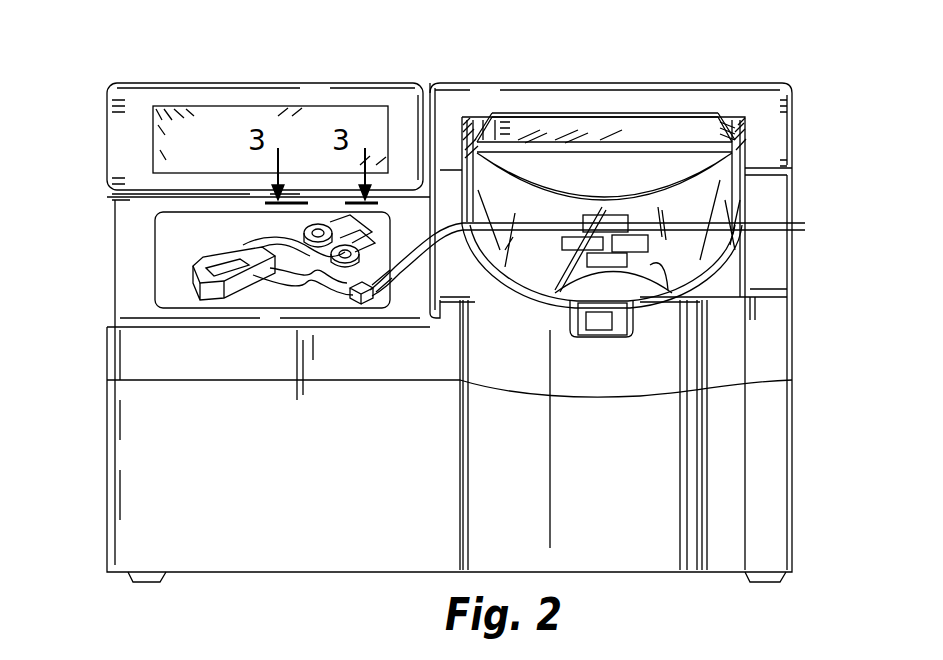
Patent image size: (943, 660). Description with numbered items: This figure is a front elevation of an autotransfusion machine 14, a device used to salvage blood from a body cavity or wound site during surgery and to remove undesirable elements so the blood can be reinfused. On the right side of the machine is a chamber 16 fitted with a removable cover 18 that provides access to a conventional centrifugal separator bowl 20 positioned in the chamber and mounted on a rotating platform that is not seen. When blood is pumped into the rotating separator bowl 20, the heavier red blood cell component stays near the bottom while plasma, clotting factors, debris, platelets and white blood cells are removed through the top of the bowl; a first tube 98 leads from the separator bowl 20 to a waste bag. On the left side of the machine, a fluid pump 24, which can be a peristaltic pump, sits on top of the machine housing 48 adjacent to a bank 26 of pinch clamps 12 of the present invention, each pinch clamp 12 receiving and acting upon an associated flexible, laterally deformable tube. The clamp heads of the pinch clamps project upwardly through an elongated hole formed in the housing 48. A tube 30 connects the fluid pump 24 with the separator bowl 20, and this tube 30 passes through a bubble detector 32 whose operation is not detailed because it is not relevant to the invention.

The autotransfusion machine 14 is at (72, 116).
The pinch clamp 12 is at (363, 245).
The chamber 16 is at (704, 112).
The first tube 98 is at (805, 228).
The removable cover 18 is at (723, 247).
The centrifugal separator bowl 20 is at (655, 265).
The bank of pinch clamps 26 is at (272, 229).
The fluid pump 24 is at (192, 276).
The housing 48 is at (167, 298).
The bubble detector 32 is at (348, 300).
The tube 30 is at (405, 263).